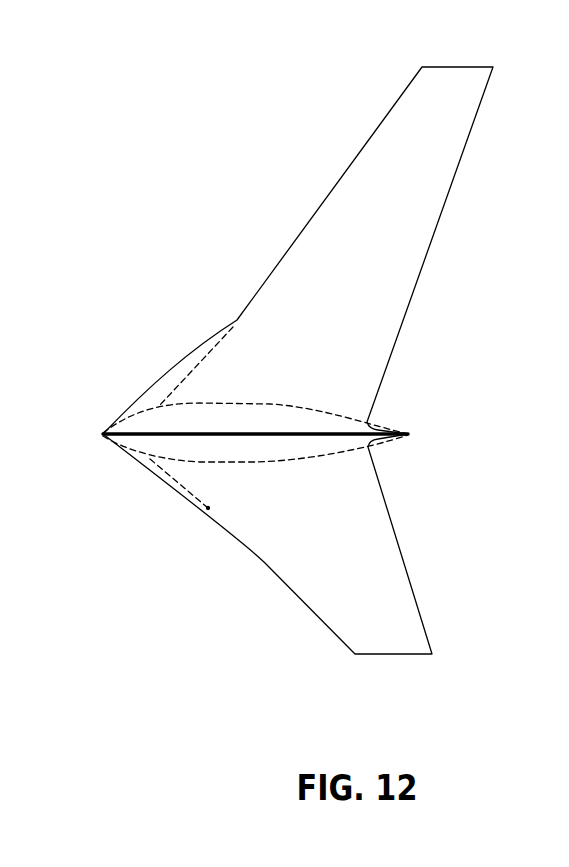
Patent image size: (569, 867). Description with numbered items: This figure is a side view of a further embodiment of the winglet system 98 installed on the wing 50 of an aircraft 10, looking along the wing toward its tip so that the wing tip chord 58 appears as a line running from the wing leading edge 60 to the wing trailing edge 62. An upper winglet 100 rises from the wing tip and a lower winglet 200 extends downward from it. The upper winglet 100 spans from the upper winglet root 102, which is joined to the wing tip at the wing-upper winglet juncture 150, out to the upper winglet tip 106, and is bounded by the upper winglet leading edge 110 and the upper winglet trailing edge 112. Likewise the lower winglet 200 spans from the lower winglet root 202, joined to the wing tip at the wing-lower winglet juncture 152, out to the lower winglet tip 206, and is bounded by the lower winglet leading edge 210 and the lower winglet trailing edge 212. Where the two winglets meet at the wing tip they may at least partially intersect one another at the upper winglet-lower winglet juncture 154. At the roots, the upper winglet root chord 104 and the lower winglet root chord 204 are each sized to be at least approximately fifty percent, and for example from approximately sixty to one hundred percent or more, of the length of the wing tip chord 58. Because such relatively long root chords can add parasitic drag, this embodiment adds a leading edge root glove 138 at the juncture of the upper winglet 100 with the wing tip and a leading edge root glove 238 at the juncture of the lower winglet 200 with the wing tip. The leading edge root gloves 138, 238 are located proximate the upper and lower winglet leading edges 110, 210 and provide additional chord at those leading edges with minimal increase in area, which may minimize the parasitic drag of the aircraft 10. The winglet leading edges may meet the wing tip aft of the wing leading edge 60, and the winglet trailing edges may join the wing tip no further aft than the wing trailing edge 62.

The aircraft 10 is at (442, 212).
The wing 50 is at (104, 430).
The wing tip chord 58 is at (210, 434).
The wing leading edge 60 is at (104, 440).
The wing trailing edge 62 is at (408, 434).
The winglet system 98 is at (390, 110).
The upper winglet 100 is at (383, 180).
The upper winglet root 102 is at (220, 403).
The upper winglet root chord 104 is at (260, 405).
The upper winglet tip 106 is at (463, 67).
The upper winglet leading edge 110 is at (342, 178).
The upper winglet trailing edge 112 is at (415, 287).
The leading edge root glove 138 is at (172, 382).
The wing-upper winglet juncture 150 is at (307, 410).
The wing-lower winglet juncture 152 is at (293, 457).
The upper winglet-lower winglet juncture 154 is at (323, 425).
The lower winglet 200 is at (383, 607).
The lower winglet root 202 is at (253, 463).
The lower winglet root chord 204 is at (332, 452).
The lower winglet tip 206 is at (400, 654).
The lower winglet leading edge 210 is at (297, 594).
The lower winglet trailing edge 212 is at (390, 523).
The leading edge root glove 238 is at (152, 475).